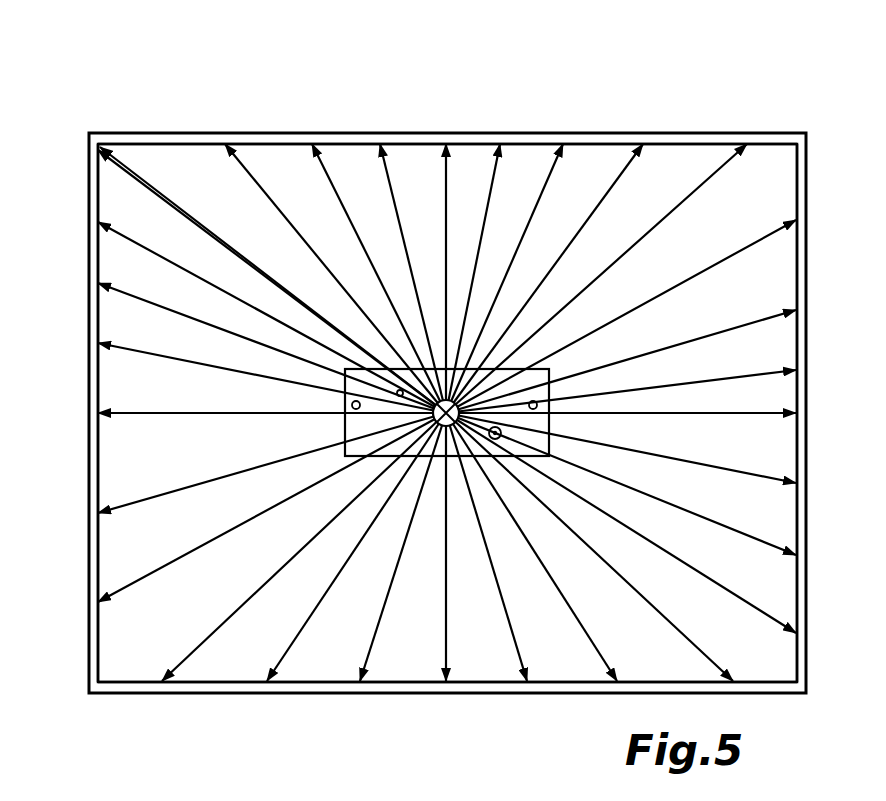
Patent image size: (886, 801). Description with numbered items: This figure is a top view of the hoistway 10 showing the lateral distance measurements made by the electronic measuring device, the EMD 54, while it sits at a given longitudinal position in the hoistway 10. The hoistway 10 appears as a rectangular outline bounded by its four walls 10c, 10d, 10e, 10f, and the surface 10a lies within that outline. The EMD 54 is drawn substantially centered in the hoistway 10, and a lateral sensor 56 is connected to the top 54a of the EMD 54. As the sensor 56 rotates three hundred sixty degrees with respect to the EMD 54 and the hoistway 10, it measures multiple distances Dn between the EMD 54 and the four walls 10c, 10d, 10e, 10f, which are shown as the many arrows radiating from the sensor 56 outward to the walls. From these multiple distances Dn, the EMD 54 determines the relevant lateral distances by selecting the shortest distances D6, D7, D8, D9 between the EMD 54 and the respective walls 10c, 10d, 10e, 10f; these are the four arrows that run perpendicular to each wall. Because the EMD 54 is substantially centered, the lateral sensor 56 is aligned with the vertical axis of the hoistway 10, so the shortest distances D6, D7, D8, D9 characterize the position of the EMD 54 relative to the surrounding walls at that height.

The hoistway 10 is at (196, 133).
The panel surface 10a is at (252, 222).
The wall of the hoistway 10c is at (800, 190).
The wall of the hoistway 10d is at (90, 497).
The wall of the hoistway 10e is at (326, 681).
The wall of the hoistway 10f is at (292, 147).
The electronic measuring device 54 is at (492, 366).
The top of the EMD 54a is at (361, 427).
The lateral sensor 56 is at (425, 468).
The shortest distance D6 is at (745, 413).
The shortest distance D7 is at (90, 498).
The shortest distance D8 is at (446, 622).
The shortest distance D9 is at (441, 188).
The multiple distances Dn is at (548, 187).